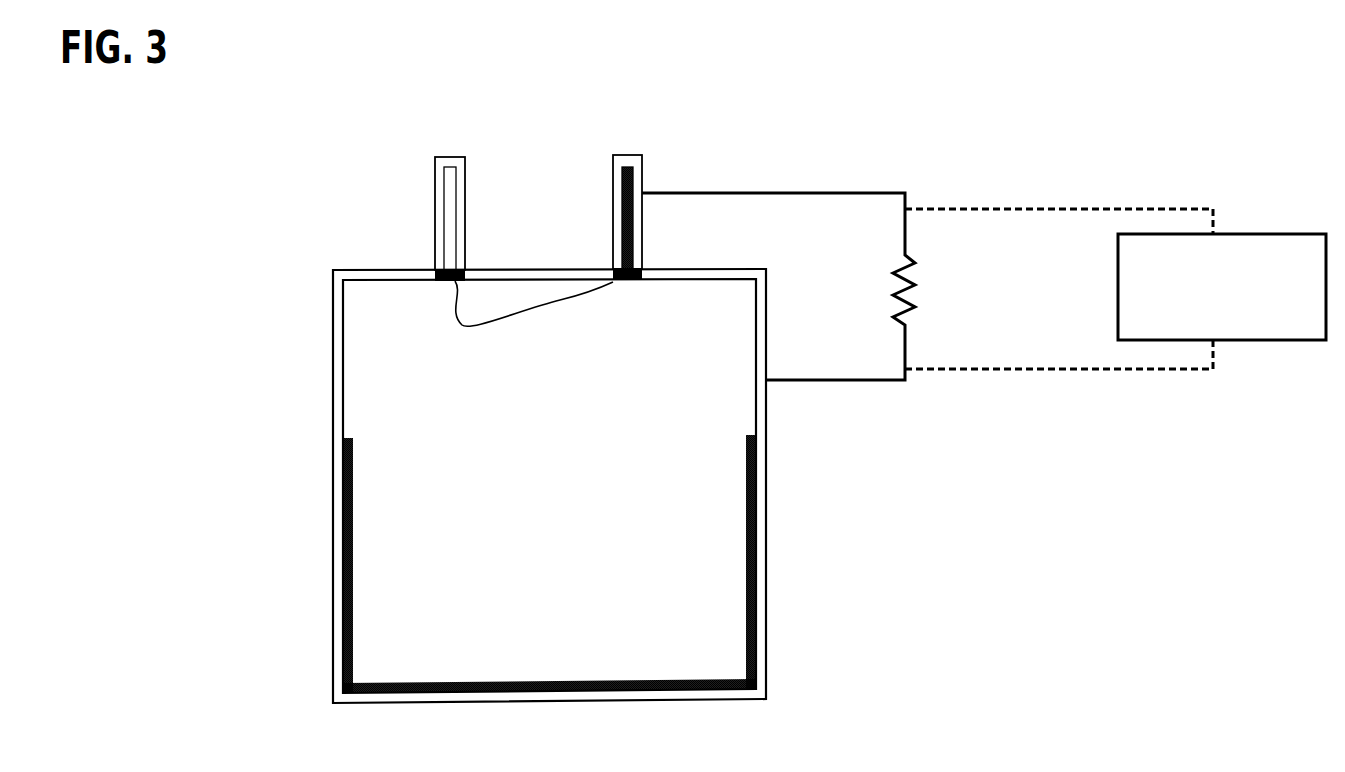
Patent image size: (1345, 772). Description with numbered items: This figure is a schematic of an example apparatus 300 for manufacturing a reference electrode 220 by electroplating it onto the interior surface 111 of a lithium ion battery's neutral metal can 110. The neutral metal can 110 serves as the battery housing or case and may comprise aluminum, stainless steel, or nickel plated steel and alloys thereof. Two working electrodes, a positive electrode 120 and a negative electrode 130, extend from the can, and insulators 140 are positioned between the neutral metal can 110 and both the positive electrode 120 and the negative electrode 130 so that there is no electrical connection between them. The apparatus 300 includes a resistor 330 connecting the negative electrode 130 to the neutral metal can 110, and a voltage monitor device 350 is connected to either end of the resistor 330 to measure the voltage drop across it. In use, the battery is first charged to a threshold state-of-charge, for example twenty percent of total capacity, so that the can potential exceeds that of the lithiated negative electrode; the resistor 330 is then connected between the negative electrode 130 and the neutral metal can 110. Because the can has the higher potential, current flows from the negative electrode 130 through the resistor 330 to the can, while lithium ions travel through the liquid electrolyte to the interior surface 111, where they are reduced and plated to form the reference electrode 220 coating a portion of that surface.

The apparatus 300 is at (135, 188).
The neutral metal can 110 is at (333, 334).
The interior surface 111 is at (343, 398).
The positive electrode 120 is at (435, 213).
The negative electrode 130 is at (613, 208).
The insulators 140 is at (530, 319).
The reference electrode 220 is at (747, 469).
The resistor 330 is at (912, 305).
The voltage monitor device 350 is at (1115, 289).